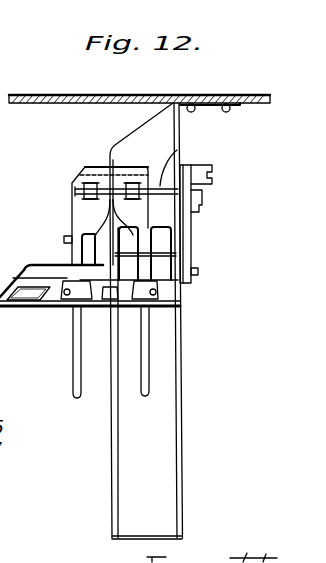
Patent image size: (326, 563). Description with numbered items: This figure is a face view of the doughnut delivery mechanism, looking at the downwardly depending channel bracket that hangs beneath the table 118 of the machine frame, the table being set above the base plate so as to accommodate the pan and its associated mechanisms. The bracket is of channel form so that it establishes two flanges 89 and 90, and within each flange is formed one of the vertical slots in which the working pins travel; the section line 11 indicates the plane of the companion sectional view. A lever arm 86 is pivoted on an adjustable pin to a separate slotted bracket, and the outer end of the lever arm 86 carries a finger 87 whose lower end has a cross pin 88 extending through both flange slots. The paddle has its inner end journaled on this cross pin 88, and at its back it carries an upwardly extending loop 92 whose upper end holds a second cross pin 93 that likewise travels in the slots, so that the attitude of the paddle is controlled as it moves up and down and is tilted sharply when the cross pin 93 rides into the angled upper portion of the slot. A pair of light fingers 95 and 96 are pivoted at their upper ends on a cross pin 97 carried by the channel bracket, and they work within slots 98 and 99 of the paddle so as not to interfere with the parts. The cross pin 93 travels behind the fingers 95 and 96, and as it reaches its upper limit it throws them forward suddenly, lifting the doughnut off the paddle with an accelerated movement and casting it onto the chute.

The table 118 is at (38, 95).
The section line 11 is at (130, 118).
The cross pin 97 is at (181, 158).
The lever arm 86 is at (205, 200).
The finger 87 is at (184, 220).
The cross pin 93 is at (63, 239).
The loop 92 is at (167, 258).
The cross pin 88 is at (199, 272).
The slot 99 is at (180, 295).
The slot 98 is at (60, 290).
The light finger 95 is at (72, 358).
The light finger 96 is at (148, 348).
The flange 89 is at (111, 450).
The flange 90 is at (184, 443).